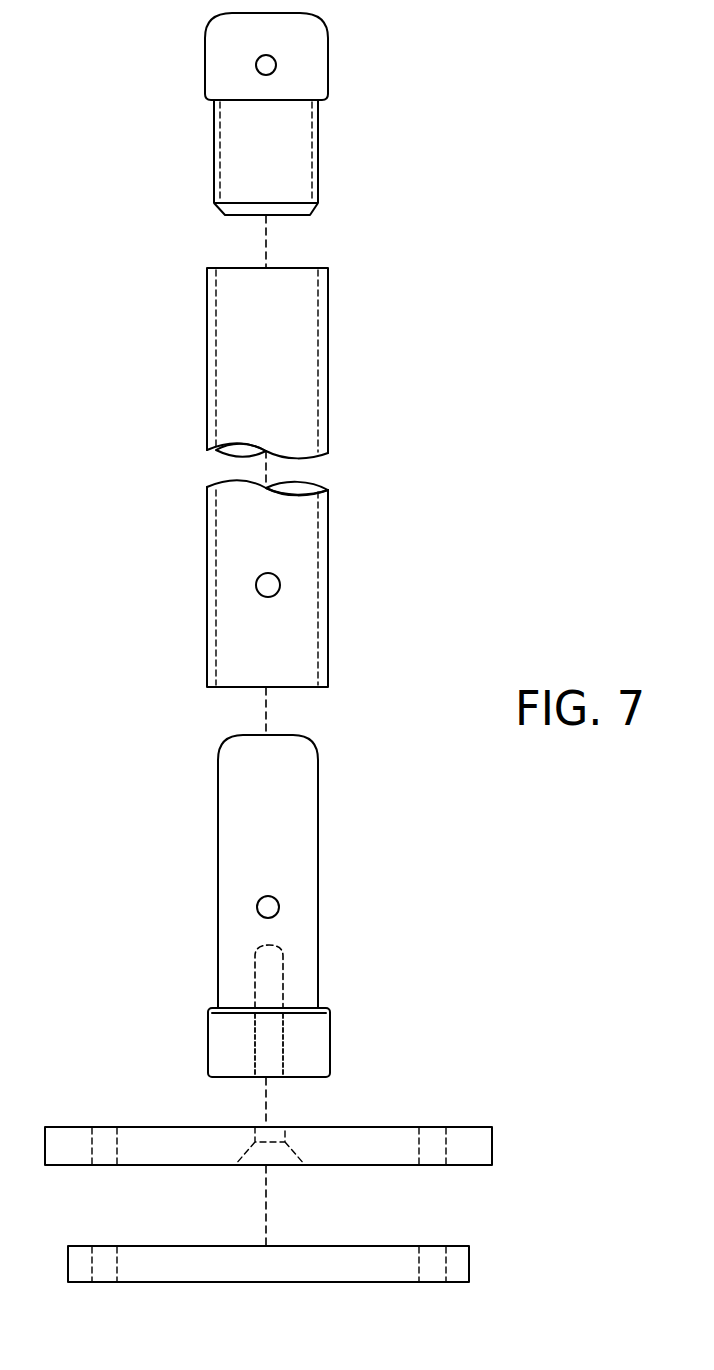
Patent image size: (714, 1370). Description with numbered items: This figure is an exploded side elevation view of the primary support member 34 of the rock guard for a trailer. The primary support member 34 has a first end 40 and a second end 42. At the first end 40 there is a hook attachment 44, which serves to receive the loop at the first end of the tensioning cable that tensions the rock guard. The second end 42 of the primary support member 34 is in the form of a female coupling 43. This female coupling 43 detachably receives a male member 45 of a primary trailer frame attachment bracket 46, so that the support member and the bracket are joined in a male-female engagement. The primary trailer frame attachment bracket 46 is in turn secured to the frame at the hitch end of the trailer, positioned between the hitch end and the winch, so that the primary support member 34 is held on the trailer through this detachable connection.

The primary support member 34 is at (509, 484).
The first end 40 is at (205, 60).
The hook attachment 44 is at (278, 64).
The female coupling 43 is at (262, 1026).
The second end 42 is at (208, 1048).
The male member 45 is at (278, 1060).
The primary trailer frame attachment bracket 46 is at (503, 1117).